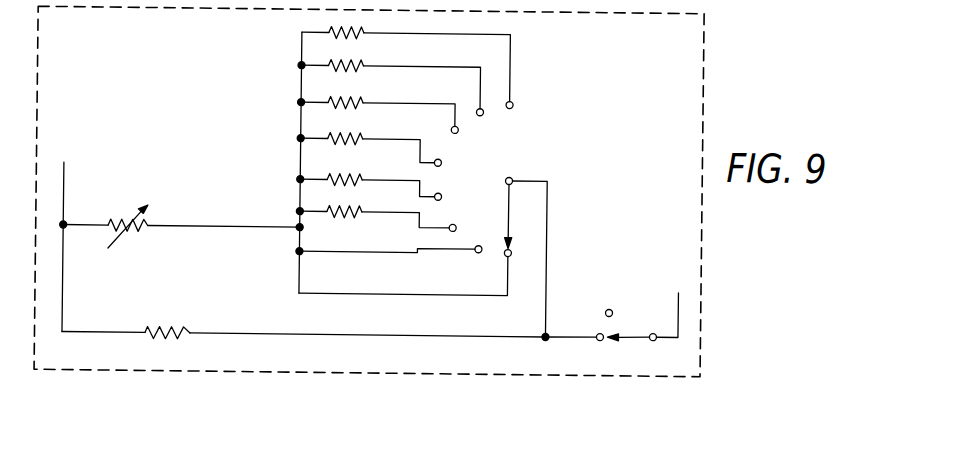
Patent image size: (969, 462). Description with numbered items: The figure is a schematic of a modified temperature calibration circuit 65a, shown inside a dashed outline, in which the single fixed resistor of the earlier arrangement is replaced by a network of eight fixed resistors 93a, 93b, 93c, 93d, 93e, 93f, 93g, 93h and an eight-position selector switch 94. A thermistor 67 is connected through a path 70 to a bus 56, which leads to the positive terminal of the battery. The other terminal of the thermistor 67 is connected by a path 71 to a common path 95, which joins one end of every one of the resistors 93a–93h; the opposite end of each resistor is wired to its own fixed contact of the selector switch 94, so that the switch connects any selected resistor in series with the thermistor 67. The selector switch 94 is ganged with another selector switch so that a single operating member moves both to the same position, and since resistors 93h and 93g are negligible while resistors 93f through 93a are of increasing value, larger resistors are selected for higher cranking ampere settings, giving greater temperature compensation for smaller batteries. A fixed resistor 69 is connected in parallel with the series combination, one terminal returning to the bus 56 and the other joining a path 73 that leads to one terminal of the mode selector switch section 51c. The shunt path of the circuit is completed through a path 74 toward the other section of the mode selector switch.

The bus 56 is at (64, 176).
The path 70 is at (86, 228).
The thermistor 67 is at (149, 207).
The path 71 is at (218, 228).
The fixed resistor 69 is at (188, 330).
The path 73 is at (280, 333).
The common path 95 is at (298, 119).
The fixed resistor 93a is at (365, 35).
The fixed resistor 93b is at (365, 68).
The fixed resistor 93c is at (365, 105).
The fixed resistor 93d is at (365, 141).
The fixed resistor 93e is at (365, 182).
The fixed resistor 93f is at (365, 214).
The fixed resistor 93g is at (358, 253).
The fixed resistor 93h is at (373, 295).
The selector switch 94 is at (524, 138).
The path 74 is at (680, 290).
The mode selector switch section 51c is at (621, 348).
The temperature calibration circuit 65a is at (236, 373).